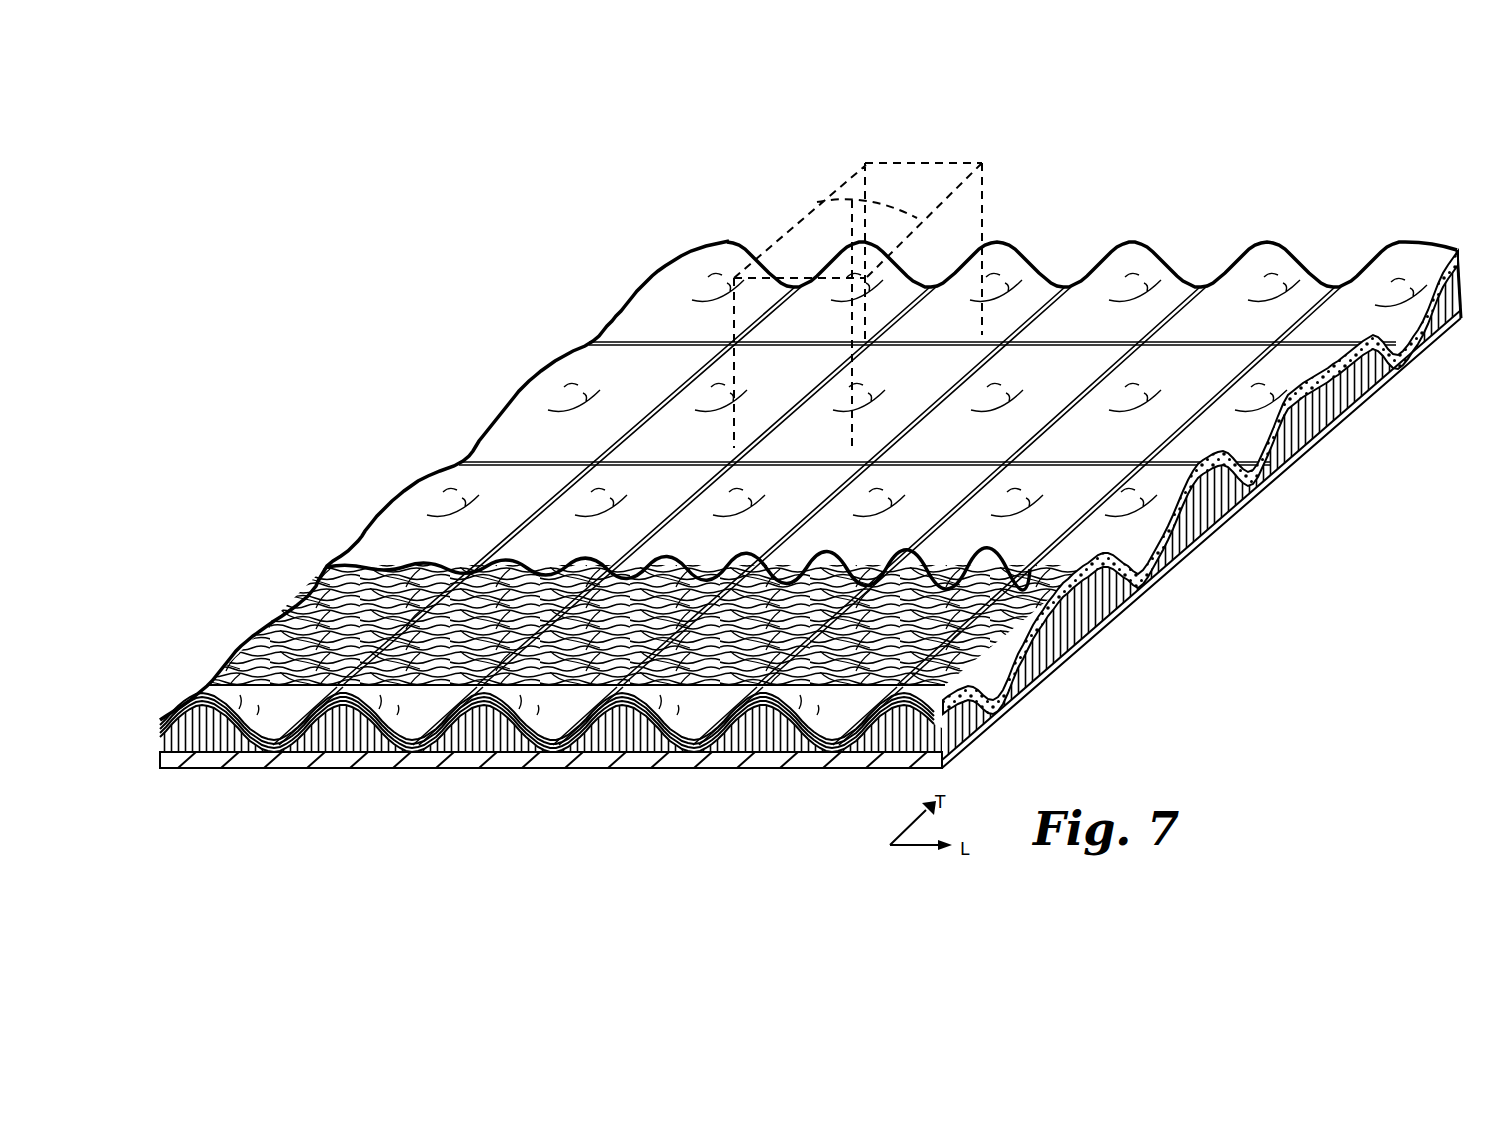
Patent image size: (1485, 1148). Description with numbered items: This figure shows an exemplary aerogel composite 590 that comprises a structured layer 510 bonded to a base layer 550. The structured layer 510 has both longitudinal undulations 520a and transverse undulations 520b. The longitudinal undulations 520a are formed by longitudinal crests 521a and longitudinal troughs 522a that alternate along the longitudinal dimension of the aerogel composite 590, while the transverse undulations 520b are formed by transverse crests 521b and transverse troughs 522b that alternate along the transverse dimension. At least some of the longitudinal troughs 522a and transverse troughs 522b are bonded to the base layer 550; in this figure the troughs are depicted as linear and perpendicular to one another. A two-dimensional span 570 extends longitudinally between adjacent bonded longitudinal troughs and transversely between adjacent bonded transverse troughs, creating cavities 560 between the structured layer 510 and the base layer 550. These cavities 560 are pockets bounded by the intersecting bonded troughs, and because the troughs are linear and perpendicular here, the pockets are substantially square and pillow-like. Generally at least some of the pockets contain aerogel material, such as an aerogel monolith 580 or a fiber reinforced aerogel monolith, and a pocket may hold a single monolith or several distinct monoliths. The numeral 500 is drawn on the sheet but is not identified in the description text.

The top sheet layer 500 is at (258, 600).
The structured layer 510 is at (318, 583).
The longitudinal undulations 520a is at (1080, 257).
The transverse undulations 520b is at (481, 428).
The longitudinal crests 521a is at (213, 684).
The transverse crests 521b is at (1323, 368).
The longitudinal troughs 522a is at (823, 753).
The transverse troughs 522b is at (990, 706).
The base layer 550 is at (233, 768).
The cavities 560 is at (1067, 630).
The two-dimensional span 570 is at (827, 197).
The aerogel monolith 580 is at (963, 747).
The aerogel composite 590 is at (208, 408).